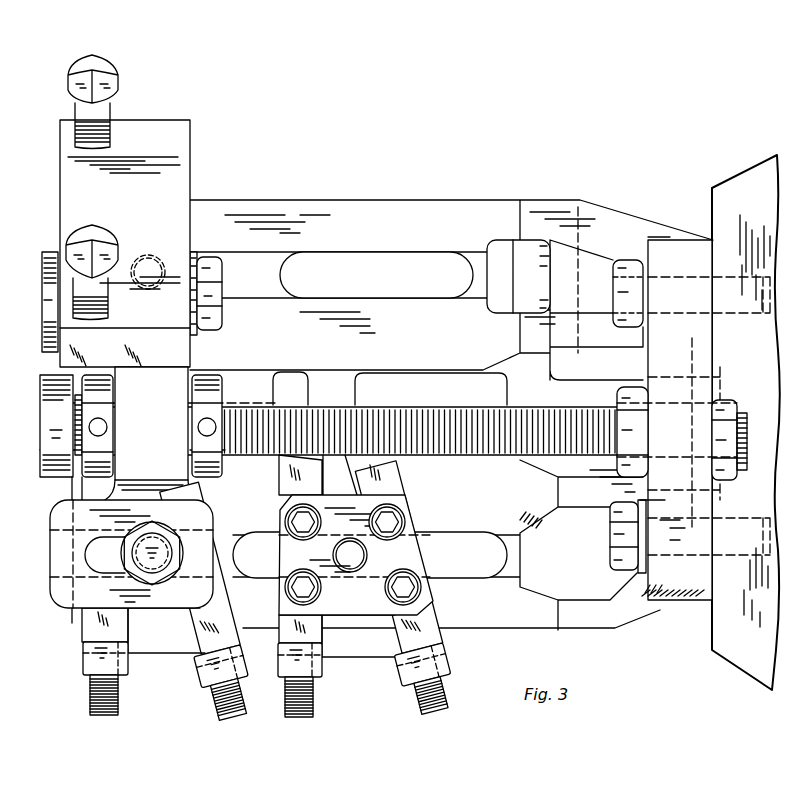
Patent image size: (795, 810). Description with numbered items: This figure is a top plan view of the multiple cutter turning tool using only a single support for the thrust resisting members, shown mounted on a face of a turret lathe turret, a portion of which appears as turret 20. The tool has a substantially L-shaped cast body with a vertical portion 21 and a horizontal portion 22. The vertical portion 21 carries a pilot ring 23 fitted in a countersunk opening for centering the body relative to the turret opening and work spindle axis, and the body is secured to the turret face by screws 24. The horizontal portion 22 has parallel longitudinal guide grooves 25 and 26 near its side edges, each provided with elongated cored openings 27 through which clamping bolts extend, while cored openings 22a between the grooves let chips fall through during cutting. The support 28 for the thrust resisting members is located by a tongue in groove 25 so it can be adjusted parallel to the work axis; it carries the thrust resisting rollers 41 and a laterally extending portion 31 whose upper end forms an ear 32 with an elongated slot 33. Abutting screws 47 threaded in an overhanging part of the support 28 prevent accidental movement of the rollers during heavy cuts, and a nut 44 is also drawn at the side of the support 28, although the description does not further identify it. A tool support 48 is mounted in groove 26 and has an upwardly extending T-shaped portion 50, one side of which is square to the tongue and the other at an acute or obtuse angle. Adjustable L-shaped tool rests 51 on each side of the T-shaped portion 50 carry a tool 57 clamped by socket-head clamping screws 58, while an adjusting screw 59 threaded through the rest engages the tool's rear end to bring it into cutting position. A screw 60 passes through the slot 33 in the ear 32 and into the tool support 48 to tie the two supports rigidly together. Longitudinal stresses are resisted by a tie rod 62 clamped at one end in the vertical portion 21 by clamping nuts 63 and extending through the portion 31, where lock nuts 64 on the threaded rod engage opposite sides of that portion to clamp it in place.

The turret 20 is at (727, 192).
The vertical portion 21 is at (673, 580).
The horizontal portion 22 is at (458, 208).
The cored openings 22a is at (280, 378).
The pilot ring 23 is at (717, 370).
The screws 24 is at (625, 270).
The guide groove 25 is at (255, 253).
The guide groove 26 is at (472, 577).
The elongated cored openings 27 is at (203, 258).
The support 28 is at (170, 175).
The laterally extending portion 31 is at (160, 377).
The ear 32 is at (62, 520).
The elongated slot 33 is at (90, 560).
The thrust resisting rollers 41 is at (43, 397).
The nut 44 is at (212, 293).
The abutting screws 47 is at (103, 112).
The tool support 48 is at (153, 640).
The T-shaped portion 50 is at (400, 550).
The L-shaped tool rests 51 is at (83, 660).
The tool 57 is at (90, 627).
The clamping screws 58 is at (397, 517).
The adjusting screw 59 is at (90, 700).
The screw 60 is at (143, 555).
The tie rod 62 is at (420, 415).
The clamping nuts 63 is at (727, 427).
The lock nuts 64 is at (95, 383).